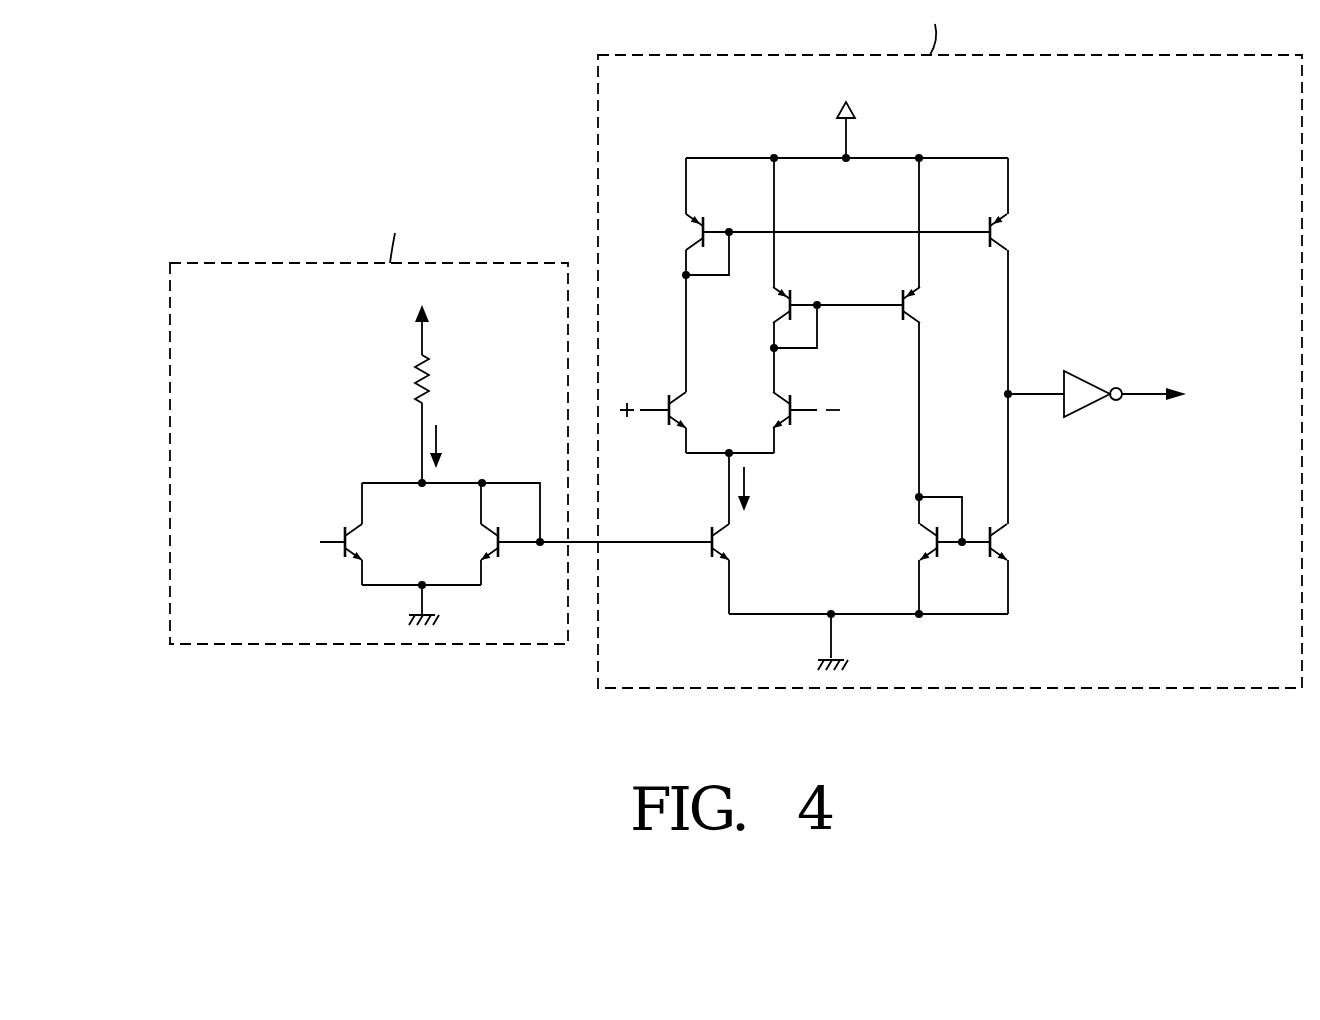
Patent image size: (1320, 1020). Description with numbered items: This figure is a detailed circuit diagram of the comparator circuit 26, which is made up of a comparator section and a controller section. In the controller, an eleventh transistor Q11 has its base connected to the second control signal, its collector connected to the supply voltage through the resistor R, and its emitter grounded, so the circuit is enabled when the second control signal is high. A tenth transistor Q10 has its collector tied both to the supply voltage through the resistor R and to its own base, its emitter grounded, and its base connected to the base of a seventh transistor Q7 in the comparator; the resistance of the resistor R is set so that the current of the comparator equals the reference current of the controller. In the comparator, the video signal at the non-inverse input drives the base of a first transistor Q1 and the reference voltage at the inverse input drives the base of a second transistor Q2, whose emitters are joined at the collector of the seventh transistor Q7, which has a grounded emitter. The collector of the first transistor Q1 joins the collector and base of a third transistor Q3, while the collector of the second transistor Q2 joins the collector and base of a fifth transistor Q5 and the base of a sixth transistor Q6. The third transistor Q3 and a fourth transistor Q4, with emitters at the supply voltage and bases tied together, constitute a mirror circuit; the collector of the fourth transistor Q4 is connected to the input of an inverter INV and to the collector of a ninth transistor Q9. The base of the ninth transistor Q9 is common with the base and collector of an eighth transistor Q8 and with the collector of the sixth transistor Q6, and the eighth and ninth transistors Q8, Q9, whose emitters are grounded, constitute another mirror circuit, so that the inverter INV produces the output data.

The comparator circuit 26 is at (399, 94).
The first transistor Q1 is at (673, 422).
The second transistor Q2 is at (787, 422).
The third transistor Q3 is at (687, 275).
The fourth transistor Q4 is at (1019, 341).
The fifth transistor Q5 is at (774, 275).
The sixth transistor Q6 is at (931, 341).
The seventh transistor Q7 is at (741, 533).
The eighth transistor Q8 is at (933, 555).
The ninth transistor Q9 is at (1019, 569).
The tenth transistor Q10 is at (485, 534).
The eleventh transistor Q11 is at (369, 534).
The resistor R is at (410, 379).
The inverter INV is at (1088, 381).